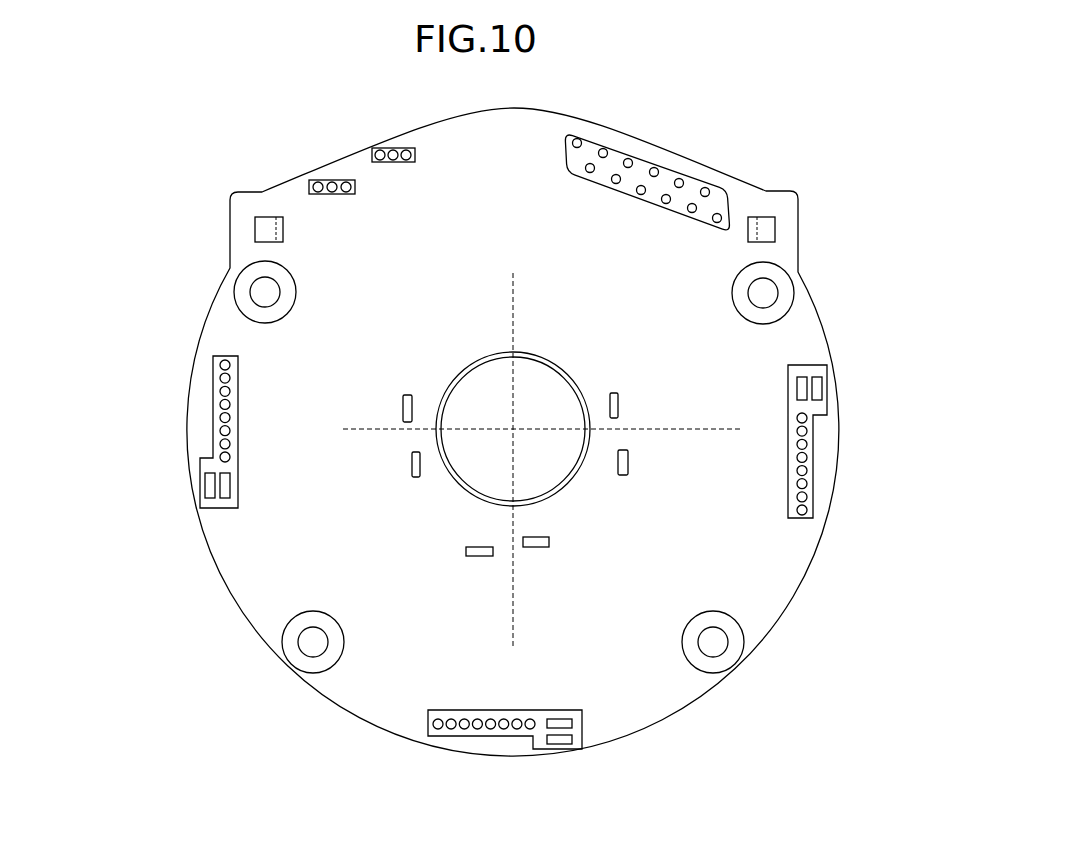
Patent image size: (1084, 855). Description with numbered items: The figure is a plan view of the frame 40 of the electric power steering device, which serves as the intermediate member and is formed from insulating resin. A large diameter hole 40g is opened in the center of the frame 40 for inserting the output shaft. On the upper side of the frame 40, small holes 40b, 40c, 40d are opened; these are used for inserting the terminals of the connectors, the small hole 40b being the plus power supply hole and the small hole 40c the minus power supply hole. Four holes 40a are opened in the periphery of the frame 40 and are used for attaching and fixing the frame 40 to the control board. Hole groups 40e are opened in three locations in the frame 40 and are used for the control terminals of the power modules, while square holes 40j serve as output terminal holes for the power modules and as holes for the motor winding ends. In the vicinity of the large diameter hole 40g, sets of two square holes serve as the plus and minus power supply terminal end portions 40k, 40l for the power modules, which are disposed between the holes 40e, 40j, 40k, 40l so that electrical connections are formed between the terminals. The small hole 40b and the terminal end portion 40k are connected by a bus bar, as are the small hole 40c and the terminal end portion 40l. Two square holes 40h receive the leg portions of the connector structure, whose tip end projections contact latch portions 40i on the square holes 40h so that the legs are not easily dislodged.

The frame 40 is at (802, 583).
The holes 40a is at (780, 297).
The small hole 40b is at (309, 187).
The small hole 40c is at (372, 150).
The small hole 40d is at (662, 164).
The hole groups 40e is at (217, 397).
The large diameter hole 40g is at (487, 503).
The square holes 40h is at (775, 223).
The latch portions 40i is at (757, 227).
The square holes 40j is at (205, 487).
The terminal end portion 40k is at (403, 395).
The terminal end portion 40l is at (410, 470).